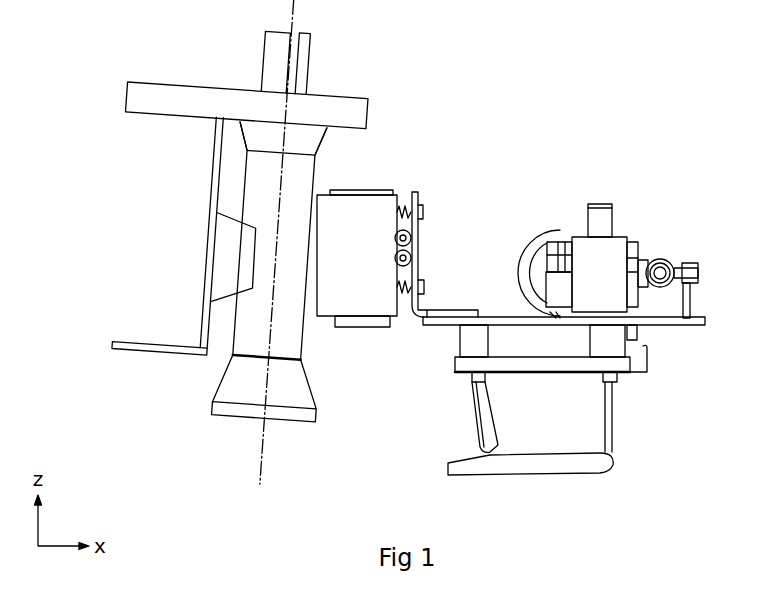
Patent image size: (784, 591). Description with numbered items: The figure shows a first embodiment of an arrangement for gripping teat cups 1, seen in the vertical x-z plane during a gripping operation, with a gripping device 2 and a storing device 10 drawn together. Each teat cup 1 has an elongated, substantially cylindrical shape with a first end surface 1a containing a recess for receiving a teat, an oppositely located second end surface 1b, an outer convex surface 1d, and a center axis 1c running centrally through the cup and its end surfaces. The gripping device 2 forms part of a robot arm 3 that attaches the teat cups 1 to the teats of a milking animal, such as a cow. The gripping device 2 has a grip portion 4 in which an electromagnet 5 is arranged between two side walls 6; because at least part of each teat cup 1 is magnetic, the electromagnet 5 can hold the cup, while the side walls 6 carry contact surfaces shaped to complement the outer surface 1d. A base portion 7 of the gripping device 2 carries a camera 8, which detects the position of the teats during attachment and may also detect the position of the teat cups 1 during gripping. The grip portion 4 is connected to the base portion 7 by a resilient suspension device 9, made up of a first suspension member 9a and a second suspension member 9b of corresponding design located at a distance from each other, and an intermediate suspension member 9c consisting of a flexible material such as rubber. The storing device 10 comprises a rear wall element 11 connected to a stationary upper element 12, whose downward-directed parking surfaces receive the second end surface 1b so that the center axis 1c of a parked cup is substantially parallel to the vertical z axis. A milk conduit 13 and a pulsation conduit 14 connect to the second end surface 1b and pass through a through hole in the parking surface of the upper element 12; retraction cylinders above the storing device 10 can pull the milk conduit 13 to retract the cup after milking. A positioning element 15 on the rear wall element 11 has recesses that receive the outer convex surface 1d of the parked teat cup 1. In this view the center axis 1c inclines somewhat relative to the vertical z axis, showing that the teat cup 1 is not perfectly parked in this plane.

The teat cup 1 is at (267, 192).
The first end surface 1a is at (238, 415).
The second end surface 1b is at (263, 125).
The center axis 1c is at (262, 443).
The outer surface 1d is at (298, 250).
The gripping device 2 is at (674, 353).
The robot arm 3 is at (660, 260).
The grip portion 4 is at (370, 290).
The electromagnet 5 is at (358, 327).
The side wall 6 is at (352, 215).
The base portion 7 is at (447, 313).
The camera 8 is at (540, 422).
The resilient suspension device 9 is at (403, 190).
The first suspension member 9a is at (415, 210).
The second suspension member 9b is at (425, 283).
The intermediate suspension member 9c is at (410, 245).
The storing device 10 is at (384, 94).
The rear wall element 11 is at (210, 227).
The upper element 12 is at (158, 95).
The milk conduit 13 is at (273, 55).
The pulsation conduit 14 is at (303, 62).
The positioning element 15 is at (228, 273).